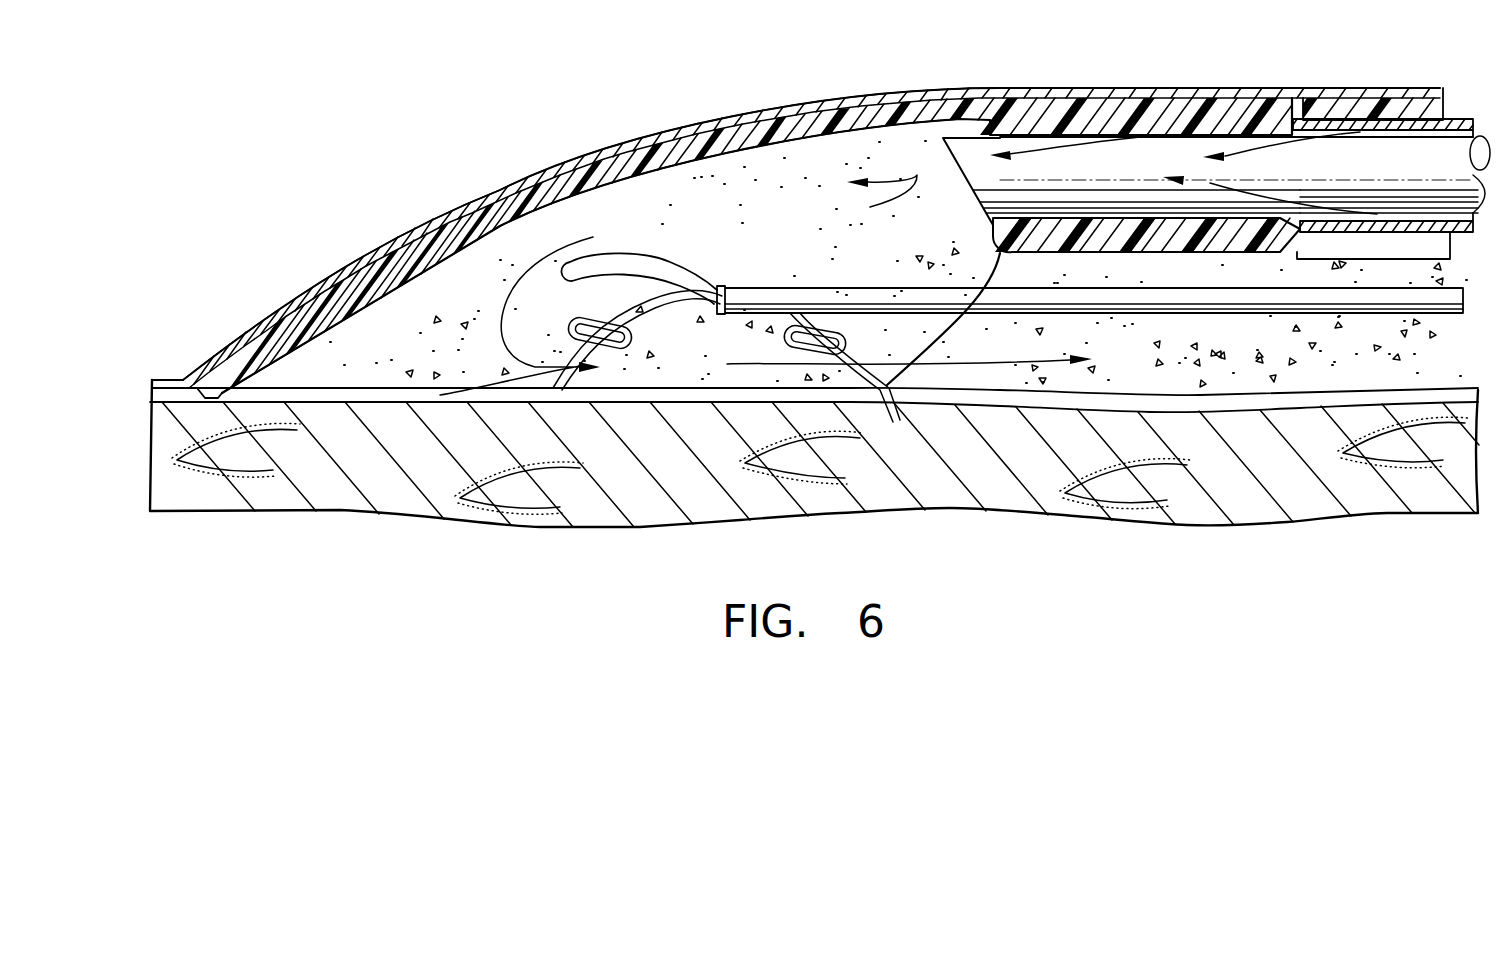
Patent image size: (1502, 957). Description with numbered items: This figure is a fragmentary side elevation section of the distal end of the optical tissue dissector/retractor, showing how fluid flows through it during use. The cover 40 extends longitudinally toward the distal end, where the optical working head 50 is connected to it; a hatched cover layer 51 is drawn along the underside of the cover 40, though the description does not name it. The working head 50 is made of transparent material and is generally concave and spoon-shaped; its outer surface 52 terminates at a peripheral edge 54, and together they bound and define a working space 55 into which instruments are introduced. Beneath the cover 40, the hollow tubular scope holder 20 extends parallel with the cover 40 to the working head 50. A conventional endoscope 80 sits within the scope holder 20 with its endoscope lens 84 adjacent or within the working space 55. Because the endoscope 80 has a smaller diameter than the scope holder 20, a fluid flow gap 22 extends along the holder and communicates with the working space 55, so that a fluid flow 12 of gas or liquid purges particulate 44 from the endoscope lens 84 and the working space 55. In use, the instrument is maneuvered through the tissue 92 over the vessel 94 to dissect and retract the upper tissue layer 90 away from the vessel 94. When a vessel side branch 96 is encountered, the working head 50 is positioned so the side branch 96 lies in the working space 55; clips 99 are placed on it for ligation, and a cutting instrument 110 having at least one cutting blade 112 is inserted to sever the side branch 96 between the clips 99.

The fluid flow 12 is at (878, 199).
The scope holder 20 is at (1467, 120).
The fluid flow gap 22 is at (1448, 213).
The cover 40 is at (1363, 102).
The particulate 44 is at (440, 323).
The optical working head 50 is at (478, 208).
The insulating layer 51 is at (1077, 117).
The outer surface 52 is at (323, 298).
The peripheral edge 54 is at (320, 390).
The working space 55 is at (790, 224).
The endoscope 80 is at (1325, 179).
The endoscope lens 84 is at (952, 143).
The upper tissue layer 90 is at (628, 133).
The tissue 92 is at (613, 525).
The vessel 94 is at (440, 398).
The vessel side branch 96 is at (888, 415).
The clips 99 is at (780, 347).
The cutting instrument 110 is at (873, 292).
The cutting blade 112 is at (647, 262).